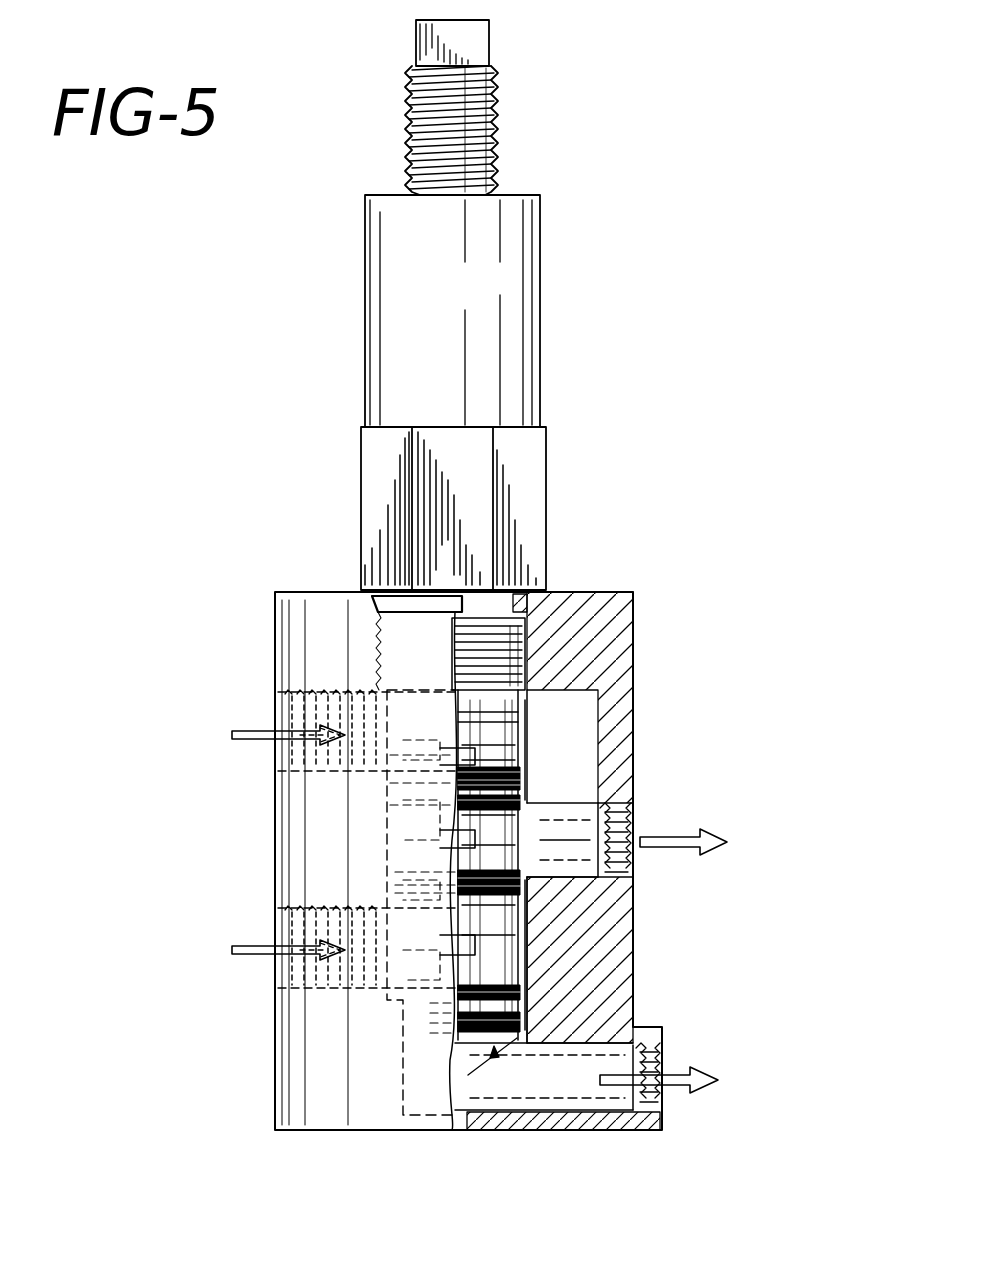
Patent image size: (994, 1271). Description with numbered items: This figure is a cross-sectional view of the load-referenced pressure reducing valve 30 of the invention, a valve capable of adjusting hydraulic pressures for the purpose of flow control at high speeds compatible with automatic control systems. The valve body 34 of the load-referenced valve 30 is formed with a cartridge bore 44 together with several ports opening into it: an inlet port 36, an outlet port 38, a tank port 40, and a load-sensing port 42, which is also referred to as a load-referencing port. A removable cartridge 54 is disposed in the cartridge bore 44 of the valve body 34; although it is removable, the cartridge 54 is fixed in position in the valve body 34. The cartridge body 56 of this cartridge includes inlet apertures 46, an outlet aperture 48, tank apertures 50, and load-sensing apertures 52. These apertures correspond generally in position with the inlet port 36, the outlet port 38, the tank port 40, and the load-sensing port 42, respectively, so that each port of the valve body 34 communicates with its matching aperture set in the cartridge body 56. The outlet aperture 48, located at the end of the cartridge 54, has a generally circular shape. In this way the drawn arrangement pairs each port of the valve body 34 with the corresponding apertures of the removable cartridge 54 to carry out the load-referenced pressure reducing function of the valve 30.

The load-referenced pressure reducing valve 30 is at (685, 183).
The valve body 34 is at (316, 600).
The inlet port 36 is at (320, 920).
The outlet port 38 is at (655, 1052).
The tank port 40 is at (632, 870).
The load-sensing port 42 is at (272, 712).
The cartridge bore 44 is at (527, 710).
The inlet apertures 46 is at (508, 945).
The outlet aperture 48 is at (490, 1060).
The tank apertures 50 is at (470, 855).
The load-sensing apertures 52 is at (527, 768).
The removable cartridge 54 is at (540, 470).
The cartridge body 56 is at (395, 278).